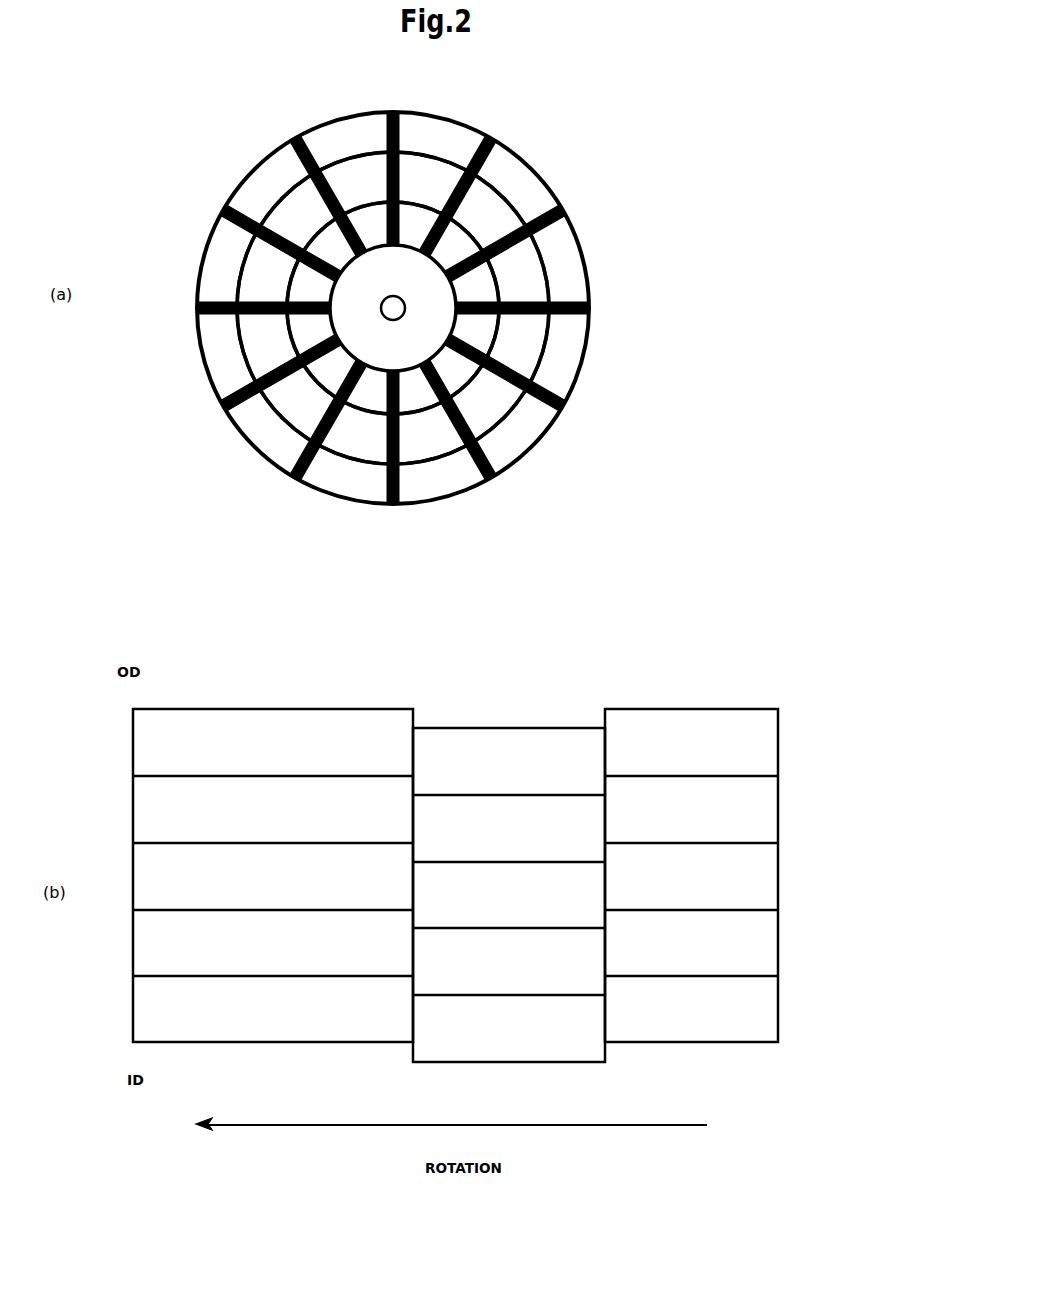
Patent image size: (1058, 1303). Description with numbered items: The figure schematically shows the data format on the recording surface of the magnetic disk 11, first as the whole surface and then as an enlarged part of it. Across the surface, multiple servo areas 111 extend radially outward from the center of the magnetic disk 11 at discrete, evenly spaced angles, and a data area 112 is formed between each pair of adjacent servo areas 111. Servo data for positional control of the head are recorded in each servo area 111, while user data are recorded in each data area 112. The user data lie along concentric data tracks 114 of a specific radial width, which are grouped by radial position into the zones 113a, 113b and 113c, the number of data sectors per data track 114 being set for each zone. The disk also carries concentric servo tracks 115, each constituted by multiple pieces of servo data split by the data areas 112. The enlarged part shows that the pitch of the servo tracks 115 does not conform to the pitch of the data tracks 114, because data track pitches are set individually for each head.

The magnetic disk 11 is at (200, 273).
The servo area 111 is at (565, 207).
The data area 112 is at (518, 180).
The zone 113a is at (563, 352).
The zone 113b is at (487, 403).
The zone 113c is at (480, 290).
The data track 114 is at (413, 690).
The servo track 115 is at (582, 682).